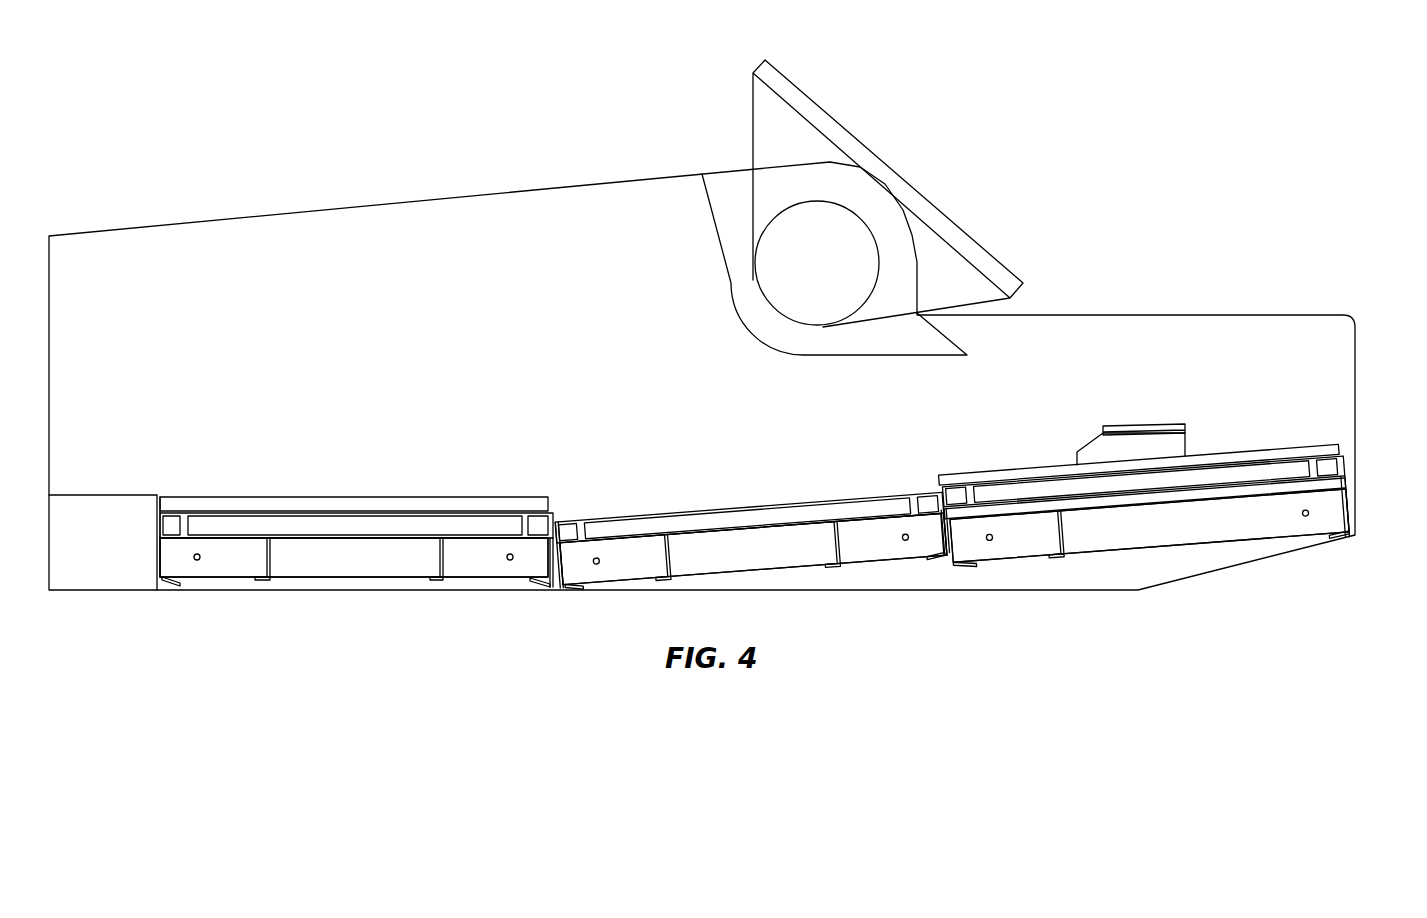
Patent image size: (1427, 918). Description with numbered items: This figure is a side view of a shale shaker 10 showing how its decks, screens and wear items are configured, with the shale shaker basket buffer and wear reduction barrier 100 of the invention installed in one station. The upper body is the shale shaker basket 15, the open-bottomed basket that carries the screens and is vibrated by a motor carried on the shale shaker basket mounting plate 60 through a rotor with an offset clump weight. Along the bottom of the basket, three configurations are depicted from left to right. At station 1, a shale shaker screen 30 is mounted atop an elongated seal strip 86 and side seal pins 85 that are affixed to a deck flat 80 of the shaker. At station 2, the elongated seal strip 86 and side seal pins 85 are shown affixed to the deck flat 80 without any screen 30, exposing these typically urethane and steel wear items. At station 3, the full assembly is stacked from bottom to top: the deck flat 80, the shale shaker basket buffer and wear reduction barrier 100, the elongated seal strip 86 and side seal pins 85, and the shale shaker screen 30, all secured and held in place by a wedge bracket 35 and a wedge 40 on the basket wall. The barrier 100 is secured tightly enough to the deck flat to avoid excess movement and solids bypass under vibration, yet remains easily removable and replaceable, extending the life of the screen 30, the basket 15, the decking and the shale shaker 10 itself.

The shale shaker 10 is at (510, 163).
The shale shaker basket 15 is at (627, 351).
The shale shaker basket mounting plate 60 is at (922, 162).
The screen mounted atop seal strip and pins on deck 1 is at (354, 485).
The seal strip and pins on deck absent a screen 2 is at (753, 513).
The assembly with wear reduction barrier 3 is at (1149, 467).
The shale shaker screen 30 is at (385, 503).
The elongated seal strip 86 is at (248, 522).
The side seal pin 85 is at (568, 530).
The shale shaker basket buffer and wear reduction barrier 100 is at (1342, 483).
The deck flat 80 is at (360, 568).
The wedge 40 is at (1078, 452).
The wedge bracket 35 is at (1178, 427).